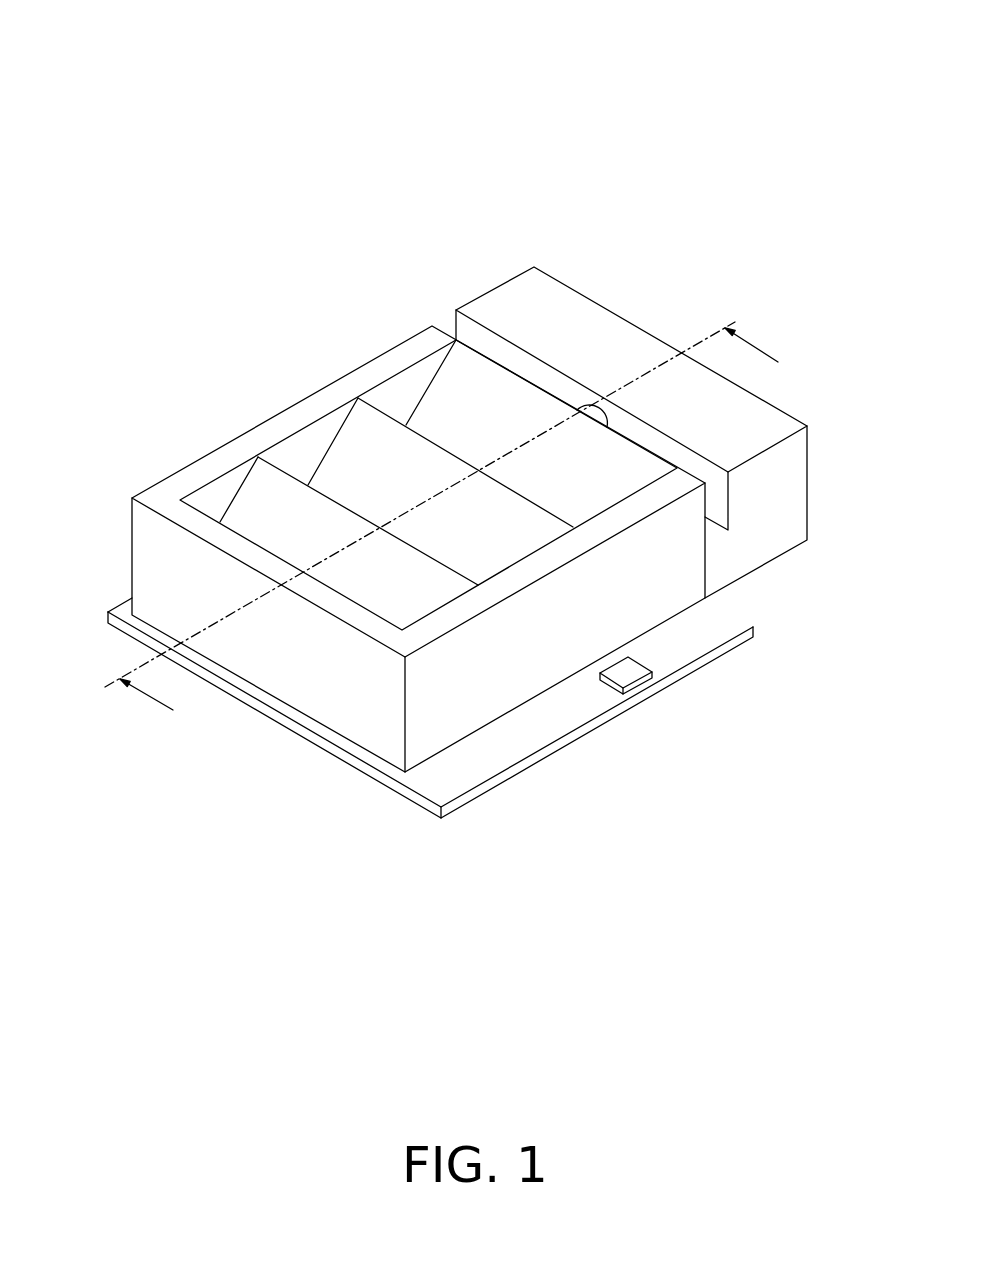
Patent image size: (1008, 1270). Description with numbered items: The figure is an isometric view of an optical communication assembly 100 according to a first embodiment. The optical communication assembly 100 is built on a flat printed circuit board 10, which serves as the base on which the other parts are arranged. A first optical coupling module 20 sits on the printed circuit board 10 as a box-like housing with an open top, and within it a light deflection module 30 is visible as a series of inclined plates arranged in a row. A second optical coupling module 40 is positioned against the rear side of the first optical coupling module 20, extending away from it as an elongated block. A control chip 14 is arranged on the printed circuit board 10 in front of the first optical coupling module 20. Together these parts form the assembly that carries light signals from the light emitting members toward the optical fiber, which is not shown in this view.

The optical communication assembly 100 is at (480, 61).
The printed circuit board 10 is at (582, 712).
The control chip 14 is at (622, 670).
The first optical coupling module 20 is at (460, 683).
The light deflection module 30 is at (352, 460).
The second optical coupling module 40 is at (787, 487).